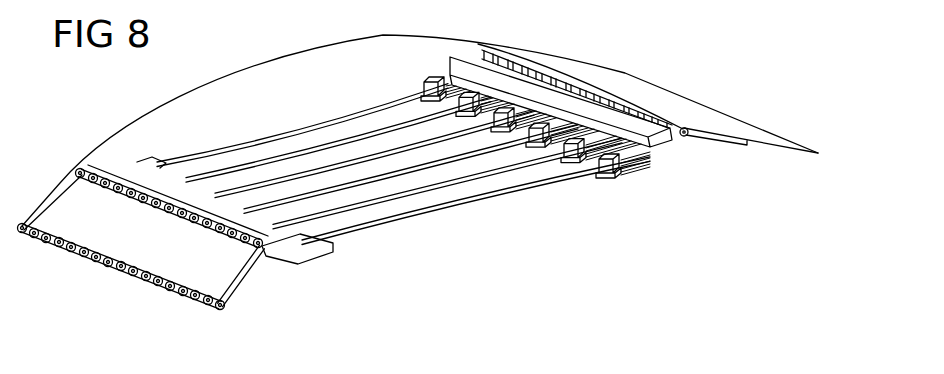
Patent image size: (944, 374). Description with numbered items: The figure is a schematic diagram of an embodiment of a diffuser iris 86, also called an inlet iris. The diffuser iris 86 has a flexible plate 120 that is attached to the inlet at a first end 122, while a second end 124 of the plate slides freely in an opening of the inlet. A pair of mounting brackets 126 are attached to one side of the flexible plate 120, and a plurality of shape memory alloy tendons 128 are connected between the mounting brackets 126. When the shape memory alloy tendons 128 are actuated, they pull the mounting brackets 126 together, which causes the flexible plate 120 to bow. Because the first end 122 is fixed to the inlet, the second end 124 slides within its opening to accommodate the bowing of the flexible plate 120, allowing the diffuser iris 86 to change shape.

The diffuser iris 86 is at (278, 23).
The flexible plate 120 is at (383, 50).
The first end 122 is at (228, 305).
The second end 124 is at (805, 153).
The mounting brackets 126 is at (300, 260).
The shape memory alloy tendons 128 is at (283, 177).